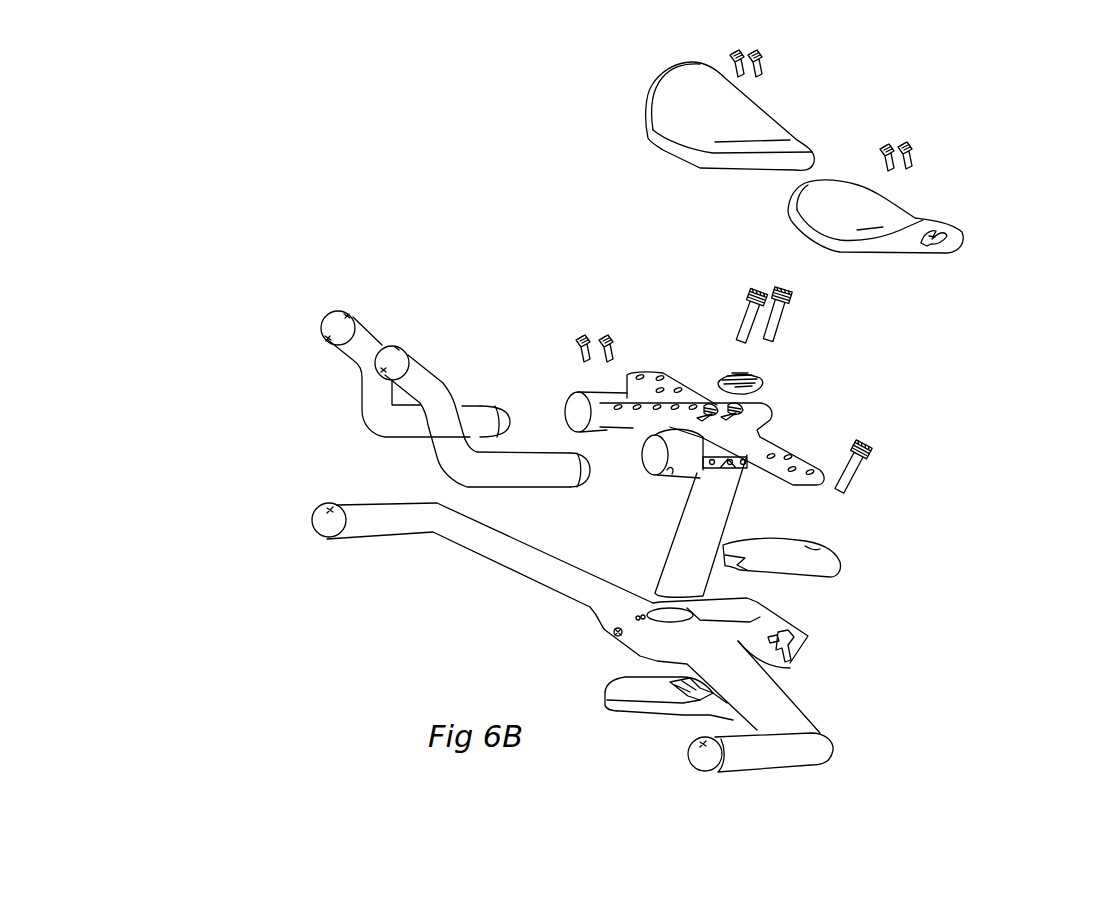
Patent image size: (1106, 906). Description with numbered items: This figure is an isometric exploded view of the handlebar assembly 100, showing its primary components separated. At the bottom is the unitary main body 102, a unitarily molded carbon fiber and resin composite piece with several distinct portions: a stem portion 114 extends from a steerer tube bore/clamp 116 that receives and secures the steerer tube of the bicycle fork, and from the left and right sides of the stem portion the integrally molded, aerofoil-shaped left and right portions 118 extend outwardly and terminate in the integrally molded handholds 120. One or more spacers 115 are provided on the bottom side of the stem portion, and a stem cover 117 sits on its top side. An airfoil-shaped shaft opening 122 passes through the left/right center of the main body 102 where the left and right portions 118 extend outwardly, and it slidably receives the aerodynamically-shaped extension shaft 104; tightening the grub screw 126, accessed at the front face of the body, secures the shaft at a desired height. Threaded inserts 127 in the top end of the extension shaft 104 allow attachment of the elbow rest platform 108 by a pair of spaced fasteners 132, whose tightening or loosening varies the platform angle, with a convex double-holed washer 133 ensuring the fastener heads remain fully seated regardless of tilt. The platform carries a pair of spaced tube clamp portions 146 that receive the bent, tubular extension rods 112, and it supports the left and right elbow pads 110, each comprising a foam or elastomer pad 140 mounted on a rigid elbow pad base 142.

The handlebar assembly 100 is at (634, 416).
The unitary main body 102 is at (609, 637).
The extension shaft 104 is at (732, 526).
The elbow rest platform 108 is at (739, 403).
The elbow pads 110 is at (800, 159).
The extension rods 112 is at (455, 416).
The stem portion 114 is at (819, 650).
The spacers 115 is at (669, 737).
The steerer tube bore/clamp 116 is at (705, 602).
The stem cover 117 is at (827, 557).
The left and right portions 118 is at (627, 619).
The handholds 120 is at (562, 637).
The shaft opening 122 is at (651, 577).
The grub screw 126 is at (572, 650).
The threaded inserts 127 is at (807, 481).
The fasteners 132 is at (769, 316).
The convex double-holed washer 133 is at (780, 382).
The elbow pad 140 is at (831, 126).
The elbow pad base 142 is at (739, 215).
The tube clamp portions 146 is at (613, 395).